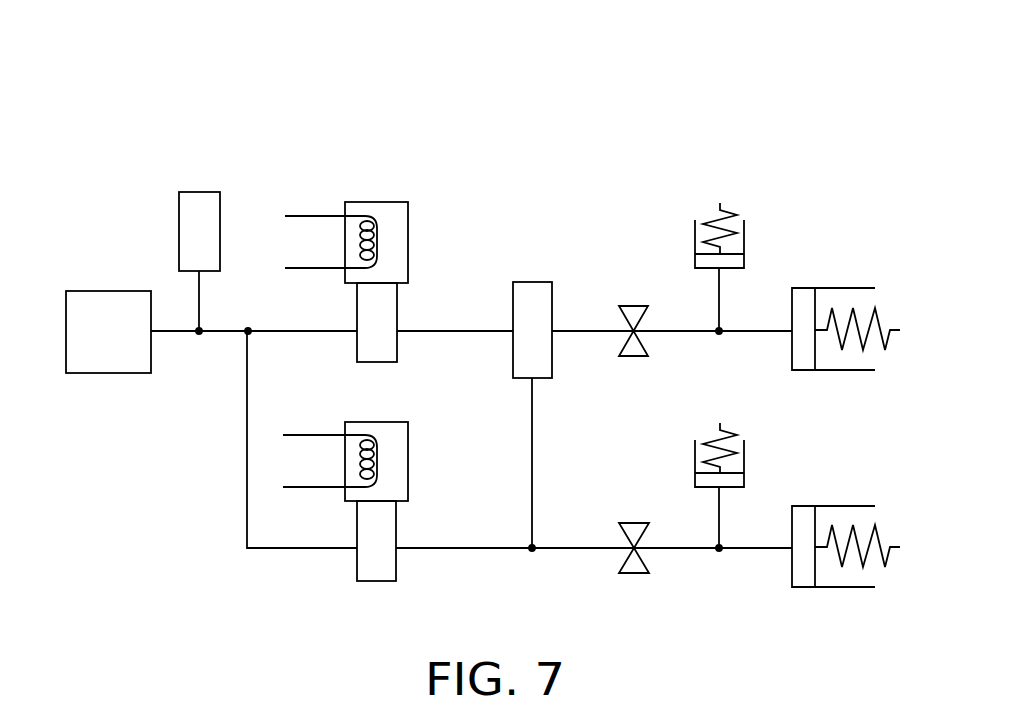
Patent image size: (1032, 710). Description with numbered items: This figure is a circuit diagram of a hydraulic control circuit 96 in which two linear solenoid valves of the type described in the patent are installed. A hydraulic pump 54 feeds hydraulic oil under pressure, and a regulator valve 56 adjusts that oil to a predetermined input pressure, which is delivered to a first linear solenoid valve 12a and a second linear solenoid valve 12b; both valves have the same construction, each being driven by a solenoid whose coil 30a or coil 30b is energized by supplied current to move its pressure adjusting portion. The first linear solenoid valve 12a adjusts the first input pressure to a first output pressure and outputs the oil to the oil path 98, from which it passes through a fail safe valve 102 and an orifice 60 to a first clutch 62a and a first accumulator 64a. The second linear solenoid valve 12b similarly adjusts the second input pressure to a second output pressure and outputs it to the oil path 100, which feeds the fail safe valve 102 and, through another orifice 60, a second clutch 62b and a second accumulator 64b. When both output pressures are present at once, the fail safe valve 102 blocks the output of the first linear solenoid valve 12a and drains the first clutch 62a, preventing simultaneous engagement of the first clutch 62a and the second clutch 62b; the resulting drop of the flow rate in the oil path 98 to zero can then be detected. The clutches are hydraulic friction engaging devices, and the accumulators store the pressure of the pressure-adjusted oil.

The hydraulic control circuit 96 is at (292, 69).
The hydraulic pump 54 is at (112, 269).
The regulator valve 56 is at (245, 213).
The first linear solenoid valve 12a is at (438, 230).
The second linear solenoid valve 12b is at (438, 450).
The first solenoid coil 30a is at (357, 214).
The second solenoid coil 30b is at (357, 434).
The oil path 98 is at (482, 329).
The oil path 100 is at (482, 549).
The fail safe valve 102 is at (535, 263).
The orifice 60 is at (633, 291).
The first accumulator 64a is at (768, 226).
The second accumulator 64b is at (680, 446).
The first clutch 62a is at (843, 384).
The second clutch 62b is at (843, 601).